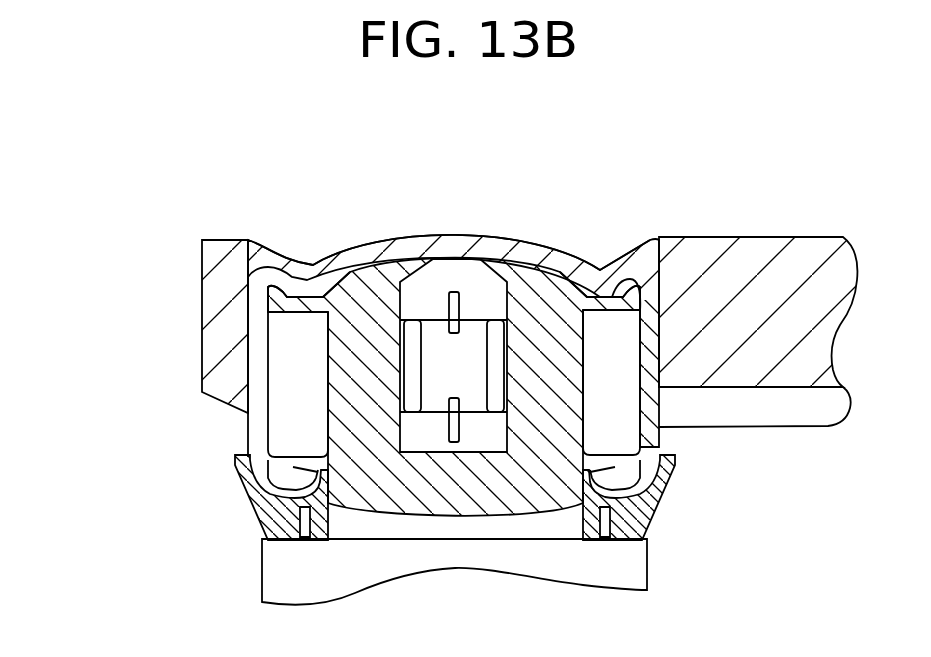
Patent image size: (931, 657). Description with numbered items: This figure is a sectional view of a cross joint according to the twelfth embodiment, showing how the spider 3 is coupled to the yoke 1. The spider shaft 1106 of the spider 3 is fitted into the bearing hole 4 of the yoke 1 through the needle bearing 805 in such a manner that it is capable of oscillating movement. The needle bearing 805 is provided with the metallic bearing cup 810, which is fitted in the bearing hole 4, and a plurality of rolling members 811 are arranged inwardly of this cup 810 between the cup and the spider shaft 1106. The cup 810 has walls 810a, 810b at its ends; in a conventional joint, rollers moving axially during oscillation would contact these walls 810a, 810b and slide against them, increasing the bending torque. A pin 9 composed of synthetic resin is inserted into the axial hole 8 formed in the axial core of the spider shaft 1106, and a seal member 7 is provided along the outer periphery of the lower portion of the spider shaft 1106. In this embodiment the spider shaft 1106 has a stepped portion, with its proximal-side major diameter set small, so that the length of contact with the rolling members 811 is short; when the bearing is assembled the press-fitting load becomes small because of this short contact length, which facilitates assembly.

The yoke 1 is at (734, 236).
The spider 3 is at (602, 567).
The bearing hole 4 is at (640, 247).
The seal member 7 is at (262, 522).
The axial hole 8 is at (405, 424).
The pin 9 is at (482, 431).
The needle bearing 805 is at (546, 249).
The bearing cup 810 is at (466, 236).
The wall of the cup 810a is at (300, 300).
The wall of the cup 810b is at (243, 477).
The rolling members 811 is at (288, 436).
The spider shaft 1106 is at (360, 320).